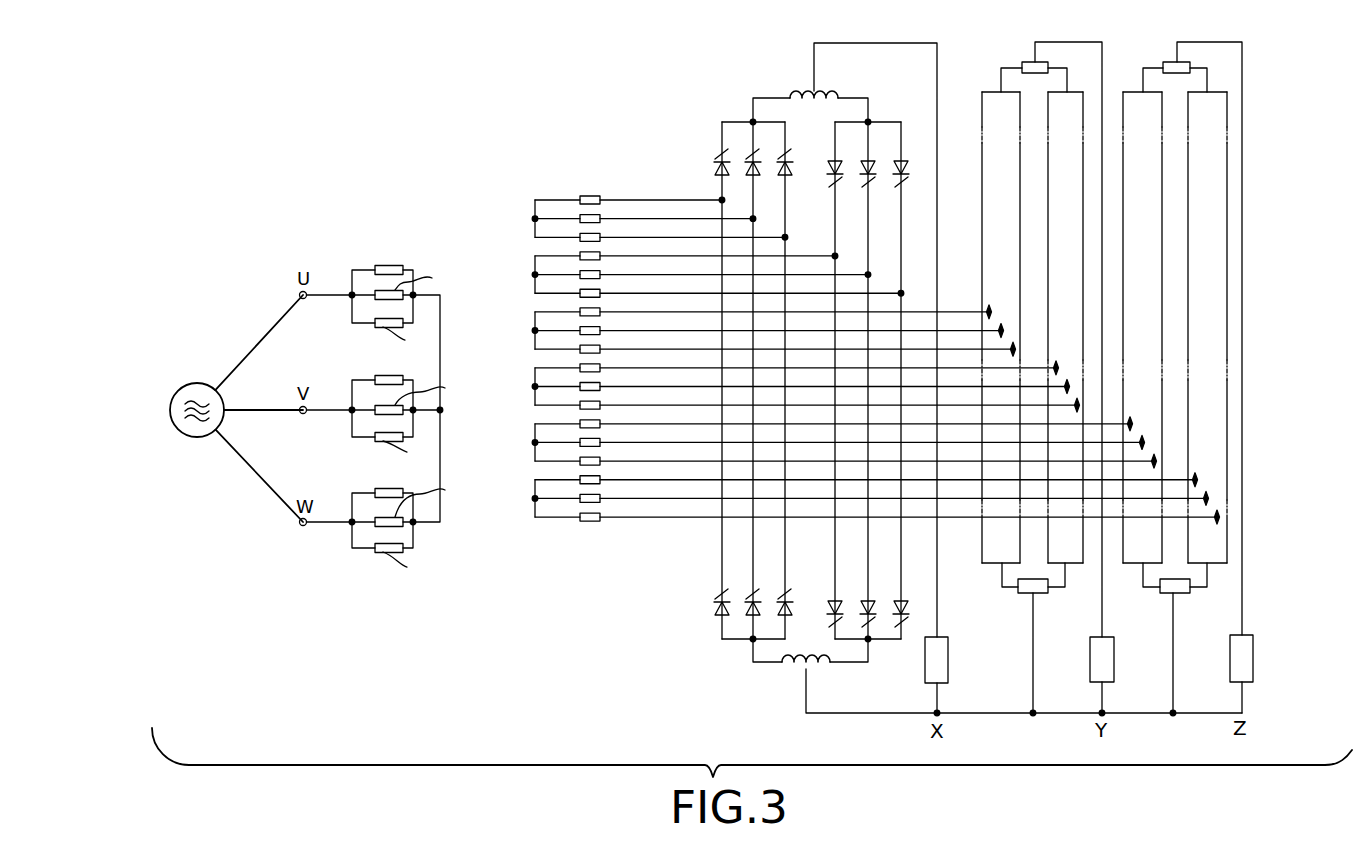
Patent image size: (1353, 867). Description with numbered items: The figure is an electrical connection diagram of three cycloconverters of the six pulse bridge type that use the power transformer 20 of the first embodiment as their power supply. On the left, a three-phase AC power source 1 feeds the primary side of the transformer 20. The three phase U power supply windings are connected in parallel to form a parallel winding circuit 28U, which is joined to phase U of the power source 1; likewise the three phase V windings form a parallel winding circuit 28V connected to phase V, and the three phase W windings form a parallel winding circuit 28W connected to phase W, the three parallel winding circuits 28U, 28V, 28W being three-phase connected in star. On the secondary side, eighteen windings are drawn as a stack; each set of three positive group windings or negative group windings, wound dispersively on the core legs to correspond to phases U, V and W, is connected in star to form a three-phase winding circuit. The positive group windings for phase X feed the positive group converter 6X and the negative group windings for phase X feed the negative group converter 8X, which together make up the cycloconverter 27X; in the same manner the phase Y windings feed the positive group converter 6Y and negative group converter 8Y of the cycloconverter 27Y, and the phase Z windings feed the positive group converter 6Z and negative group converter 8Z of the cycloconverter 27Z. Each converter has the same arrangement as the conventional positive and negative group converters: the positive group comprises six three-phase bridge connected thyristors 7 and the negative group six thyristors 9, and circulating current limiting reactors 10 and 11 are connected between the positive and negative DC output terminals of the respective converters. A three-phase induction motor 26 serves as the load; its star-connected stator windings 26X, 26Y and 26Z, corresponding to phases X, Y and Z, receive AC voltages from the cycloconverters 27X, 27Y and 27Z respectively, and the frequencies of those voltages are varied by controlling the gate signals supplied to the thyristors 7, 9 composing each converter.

The three-phase AC power source 1 is at (183, 436).
The power transformer 20 is at (495, 530).
The parallel winding circuit 28U is at (351, 281).
The parallel winding circuit 28V is at (352, 388).
The parallel winding circuit 28W is at (352, 528).
The cycloconverter 27X is at (977, 361).
The cycloconverter 27Y is at (1022, 361).
The cycloconverter 27Z is at (1204, 361).
The positive group converter 6X is at (763, 331).
The negative group converter 8X is at (875, 348).
The positive group converter 6Y is at (997, 174).
The negative group converter 8Y is at (1072, 178).
The positive group converter 6Z is at (1147, 197).
The negative group converter 8Z is at (1215, 153).
The thyristor 7 is at (797, 172).
The thyristor 9 is at (906, 174).
The circulating current limiting reactor 10 is at (814, 93).
The circulating current limiting reactor 11 is at (800, 673).
The three-phase induction motor 26 is at (1128, 672).
The stator winding 26X is at (948, 660).
The stator winding 26Y is at (1114, 653).
The stator winding 26Z is at (1257, 665).